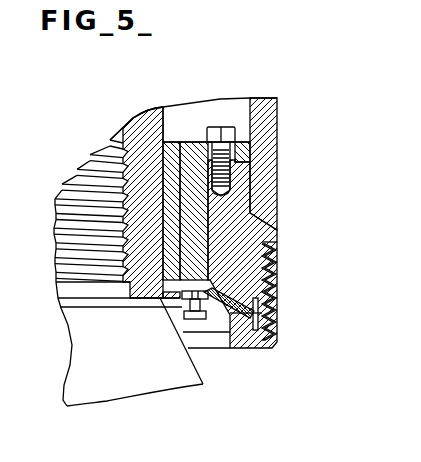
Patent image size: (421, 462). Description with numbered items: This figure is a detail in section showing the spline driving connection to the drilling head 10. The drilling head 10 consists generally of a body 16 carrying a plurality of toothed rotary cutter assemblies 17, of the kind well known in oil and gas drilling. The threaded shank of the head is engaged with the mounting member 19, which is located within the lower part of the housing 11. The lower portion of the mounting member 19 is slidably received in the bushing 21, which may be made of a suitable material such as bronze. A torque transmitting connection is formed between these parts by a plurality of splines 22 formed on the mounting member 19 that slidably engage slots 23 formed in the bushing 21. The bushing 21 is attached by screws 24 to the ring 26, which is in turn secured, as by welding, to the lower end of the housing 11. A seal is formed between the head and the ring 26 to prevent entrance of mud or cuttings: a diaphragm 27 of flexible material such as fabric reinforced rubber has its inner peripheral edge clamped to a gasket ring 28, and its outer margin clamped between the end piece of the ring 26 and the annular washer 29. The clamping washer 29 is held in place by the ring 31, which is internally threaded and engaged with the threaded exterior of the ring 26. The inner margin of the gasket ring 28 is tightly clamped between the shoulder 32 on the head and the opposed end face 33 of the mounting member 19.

The drilling head 10 is at (157, 387).
The housing 11 is at (267, 107).
The body 16 is at (98, 385).
The toothed rotary cutter assemblies 17 is at (68, 238).
The mounting member 19 is at (133, 148).
The bushing 21 is at (250, 147).
The splines 22 is at (173, 130).
The slots 23 is at (153, 127).
The screws 24 is at (221, 127).
The ring 26 is at (235, 202).
The diaphragm 27 is at (218, 313).
The gasket ring 28 is at (163, 300).
The annular washer 29 is at (245, 325).
The ring 31 is at (270, 308).
The shoulder 32 is at (137, 300).
The end face 33 is at (123, 280).